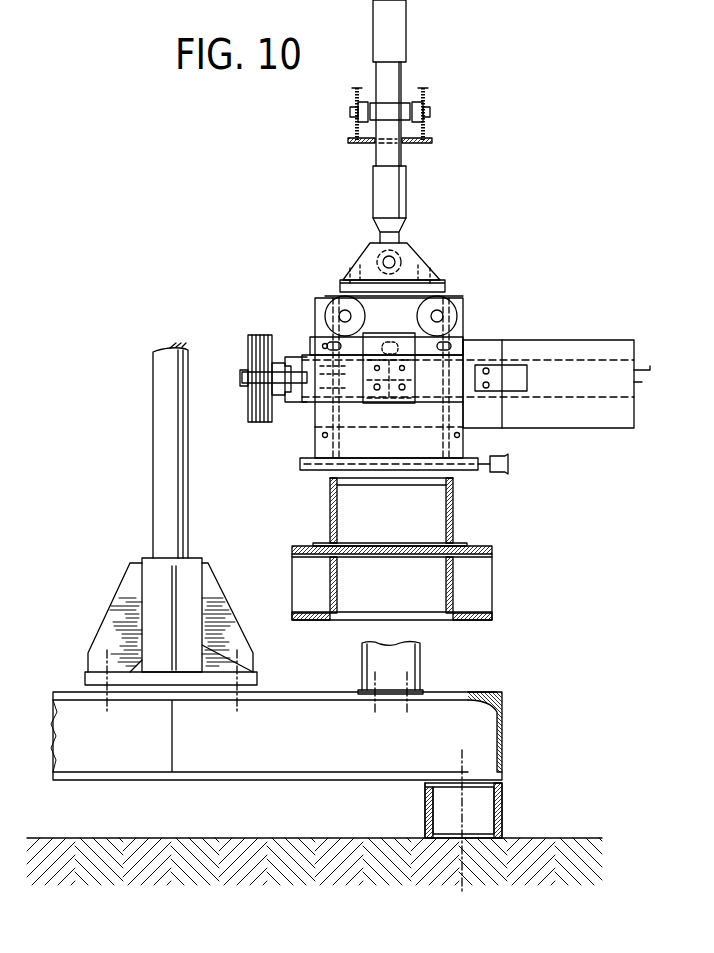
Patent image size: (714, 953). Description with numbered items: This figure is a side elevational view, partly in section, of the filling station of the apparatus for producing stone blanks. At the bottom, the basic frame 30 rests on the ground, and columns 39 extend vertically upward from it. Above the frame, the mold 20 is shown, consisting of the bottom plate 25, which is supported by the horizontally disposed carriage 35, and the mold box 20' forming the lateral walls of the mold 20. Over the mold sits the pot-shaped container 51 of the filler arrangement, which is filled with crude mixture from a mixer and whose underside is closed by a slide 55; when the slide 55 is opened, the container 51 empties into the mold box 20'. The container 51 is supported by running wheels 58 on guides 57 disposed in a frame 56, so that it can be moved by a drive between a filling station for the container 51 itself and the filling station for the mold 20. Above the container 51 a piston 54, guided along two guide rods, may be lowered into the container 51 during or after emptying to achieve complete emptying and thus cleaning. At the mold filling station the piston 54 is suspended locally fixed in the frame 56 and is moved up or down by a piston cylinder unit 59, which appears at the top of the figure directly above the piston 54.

The piston cylinder unit 59 is at (400, 200).
The piston 54 is at (443, 286).
The running wheels 58 is at (460, 318).
The guides 57 is at (490, 347).
The pot-shaped container 51 is at (436, 440).
The slide 55 is at (302, 473).
The mold 20 is at (353, 508).
The mold box 20' is at (419, 510).
The bottom plate 25 is at (470, 549).
The carriage 35 is at (483, 601).
The columns 39 is at (165, 517).
The basic frame 30 is at (68, 733).
The frame 56 is at (415, 663).